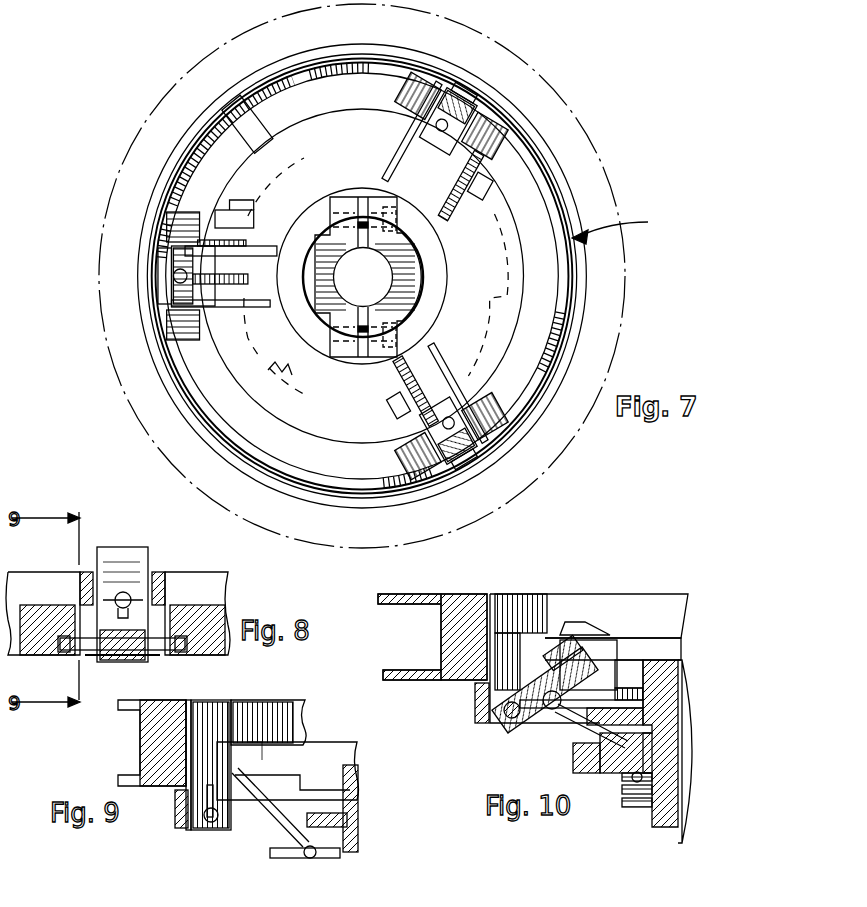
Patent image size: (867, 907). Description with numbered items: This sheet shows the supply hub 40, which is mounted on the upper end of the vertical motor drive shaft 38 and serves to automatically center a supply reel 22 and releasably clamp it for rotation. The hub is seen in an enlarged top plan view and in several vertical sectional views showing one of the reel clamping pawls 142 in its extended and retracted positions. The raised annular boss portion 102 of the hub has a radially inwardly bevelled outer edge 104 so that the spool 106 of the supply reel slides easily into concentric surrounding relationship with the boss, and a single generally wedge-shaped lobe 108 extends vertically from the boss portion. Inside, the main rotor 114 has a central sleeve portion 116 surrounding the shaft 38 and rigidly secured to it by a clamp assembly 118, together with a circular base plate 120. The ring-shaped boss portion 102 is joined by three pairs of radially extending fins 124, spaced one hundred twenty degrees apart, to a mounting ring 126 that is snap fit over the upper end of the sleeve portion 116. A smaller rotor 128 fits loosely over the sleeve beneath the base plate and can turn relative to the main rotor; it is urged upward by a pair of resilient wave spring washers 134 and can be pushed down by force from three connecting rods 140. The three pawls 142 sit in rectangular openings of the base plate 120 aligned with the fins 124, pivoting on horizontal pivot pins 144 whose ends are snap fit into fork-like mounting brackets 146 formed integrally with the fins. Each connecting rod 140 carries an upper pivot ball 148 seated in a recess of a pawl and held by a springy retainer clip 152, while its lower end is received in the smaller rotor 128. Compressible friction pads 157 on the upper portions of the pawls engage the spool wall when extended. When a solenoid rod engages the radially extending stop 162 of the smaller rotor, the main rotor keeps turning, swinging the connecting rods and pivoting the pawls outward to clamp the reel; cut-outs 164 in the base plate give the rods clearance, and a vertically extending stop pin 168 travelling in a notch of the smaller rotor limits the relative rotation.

In FIG. 9, the supply reel 22 is at (120, 778).
In FIG. 10, the supply reel 22 is at (423, 594).
In FIG. 7, the drive shaft 38 is at (350, 290).
In FIG. 7, the supply hub 40 is at (621, 228).
In FIG. 7, the annular boss portion 102 is at (555, 283).
In FIG. 8, the annular boss portion 102 is at (205, 572).
In FIG. 10, the annular boss portion 102 is at (668, 630).
In FIG. 7, the bevelled outer edge 104 is at (590, 328).
In FIG. 7, the spool 106 is at (130, 427).
In FIG. 7, the wedge-shaped lobe 108 is at (213, 130).
In FIG. 9, the wedge-shaped lobe 108 is at (276, 726).
In FIG. 10, the wedge-shaped lobe 108 is at (578, 620).
In FIG. 10, the main rotor 114 is at (500, 690).
In FIG. 10, the central sleeve portion 116 is at (668, 752).
In FIG. 7, the clamp assembly 118 is at (345, 200).
In FIG. 8, the circular base plate 120 is at (30, 648).
In FIG. 9, the circular base plate 120 is at (330, 820).
In FIG. 7, the radially extending fins 124 is at (388, 150).
In FIG. 8, the radially extending fins 124 is at (80, 585).
In FIG. 9, the radially extending fins 124 is at (292, 765).
In FIG. 10, the radially extending fins 124 is at (600, 652).
In FIG. 7, the mounting ring 126 is at (283, 182).
In FIG. 9, the mounting ring 126 is at (322, 788).
In FIG. 7, the smaller rotor 128 is at (248, 372).
In FIG. 10, the smaller rotor 128 is at (573, 760).
In FIG. 10, the wave spring washers 134 is at (625, 800).
In FIG. 7, the connecting rods 140 is at (418, 128).
In FIG. 10, the connecting rods 140 is at (590, 726).
In FIG. 7, the supply reel engaging pawls 142 is at (495, 104).
In FIG. 8, the supply reel engaging pawls 142 is at (150, 565).
In FIG. 9, the supply reel engaging pawls 142 is at (212, 722).
In FIG. 10, the supply reel engaging pawls 142 is at (528, 650).
In FIG. 8, the pivot pins 144 is at (172, 650).
In FIG. 9, the pivot pins 144 is at (215, 815).
In FIG. 10, the pivot pins 144 is at (505, 705).
In FIG. 8, the fork-like mounting brackets 146 is at (88, 655).
In FIG. 9, the fork-like mounting brackets 146 is at (205, 800).
In FIG. 10, the fork-like mounting brackets 146 is at (512, 697).
In FIG. 8, the upper pivot balls 148 is at (122, 592).
In FIG. 7, the springy retainer clips 152 is at (470, 145).
In FIG. 8, the springy retainer clips 152 is at (138, 595).
In FIG. 7, the compressible friction pads 157 is at (478, 82).
In FIG. 10, the compressible friction pads 157 is at (556, 643).
In FIG. 7, the stop 162 is at (497, 295).
In FIG. 7, the cut-outs 164 is at (478, 206).
In FIG. 10, the cut-outs 164 is at (600, 712).
In FIG. 7, the stop pin 168 is at (283, 375).